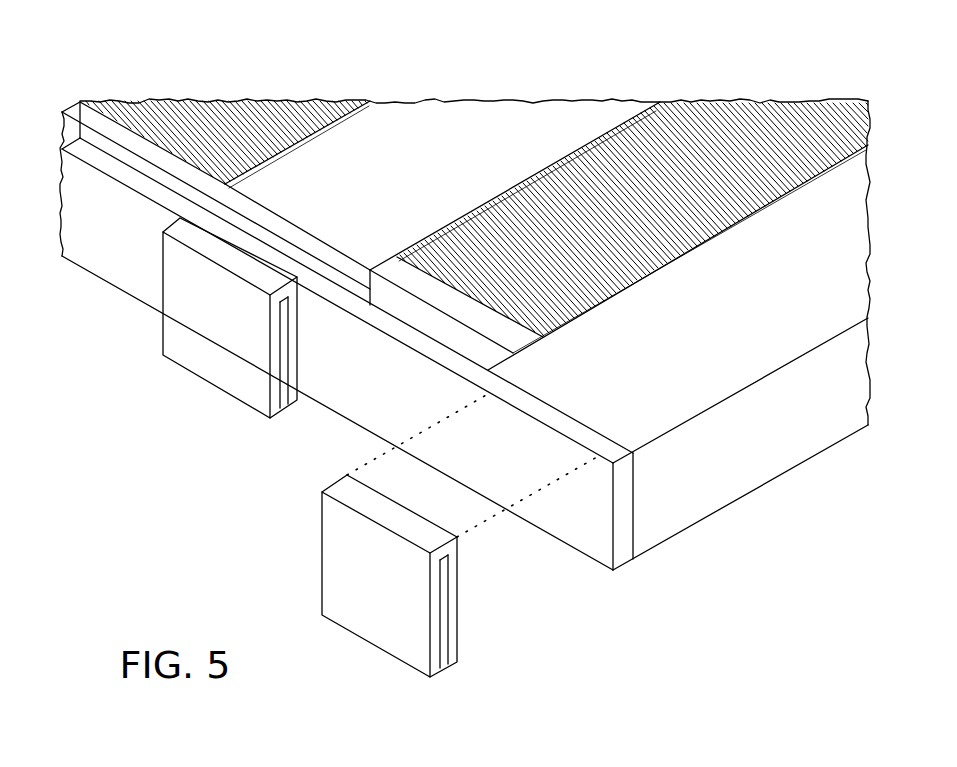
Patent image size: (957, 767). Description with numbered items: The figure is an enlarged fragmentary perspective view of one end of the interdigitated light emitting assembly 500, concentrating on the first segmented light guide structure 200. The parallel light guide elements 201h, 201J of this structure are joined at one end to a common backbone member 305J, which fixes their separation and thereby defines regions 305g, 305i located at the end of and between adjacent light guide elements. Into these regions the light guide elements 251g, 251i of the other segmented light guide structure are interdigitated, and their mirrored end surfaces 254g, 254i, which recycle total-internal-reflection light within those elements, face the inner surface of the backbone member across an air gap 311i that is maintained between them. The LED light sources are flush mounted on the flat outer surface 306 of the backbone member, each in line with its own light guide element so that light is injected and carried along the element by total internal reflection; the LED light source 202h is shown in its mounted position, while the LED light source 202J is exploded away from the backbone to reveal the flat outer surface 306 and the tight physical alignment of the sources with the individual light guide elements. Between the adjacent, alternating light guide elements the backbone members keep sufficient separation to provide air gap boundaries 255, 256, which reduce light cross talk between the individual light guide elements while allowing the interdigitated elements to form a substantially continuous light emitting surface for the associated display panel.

The first segmented light guide structure 200 is at (728, 476).
The interdigitated light emitting assembly 500 is at (700, 91).
The light guide element 201h is at (411, 163).
The light guide element 201J is at (686, 338).
The light guide element 251g is at (270, 132).
The light guide element 251i is at (580, 239).
The LED light source 202h is at (243, 328).
The LED light source 202J is at (352, 581).
The mirrored end surface 254g is at (176, 142).
The mirrored end surface 254i is at (397, 268).
The air gap boundary 255 is at (342, 121).
The air gap boundary 256 is at (520, 183).
The region 305g is at (158, 190).
The region 305i is at (414, 340).
The common backbone member 305J is at (565, 423).
The flat outer surface 306 is at (567, 530).
The air gap 311i is at (402, 309).